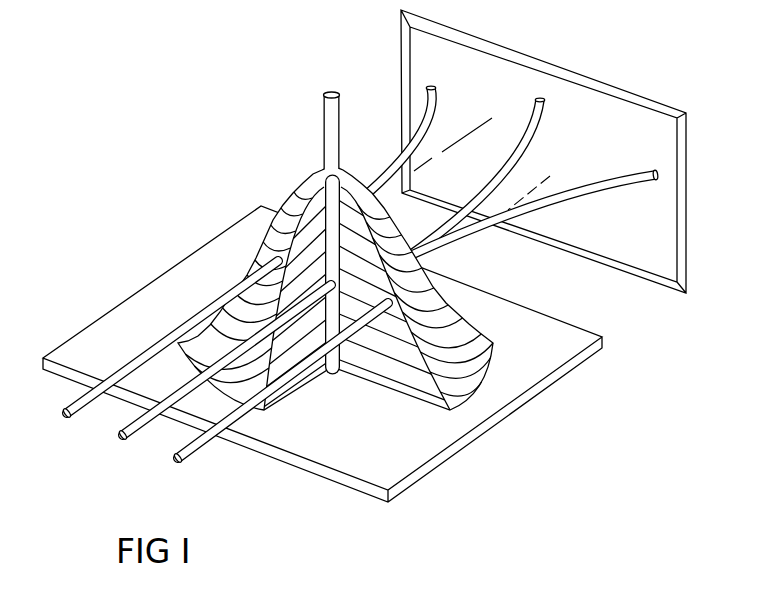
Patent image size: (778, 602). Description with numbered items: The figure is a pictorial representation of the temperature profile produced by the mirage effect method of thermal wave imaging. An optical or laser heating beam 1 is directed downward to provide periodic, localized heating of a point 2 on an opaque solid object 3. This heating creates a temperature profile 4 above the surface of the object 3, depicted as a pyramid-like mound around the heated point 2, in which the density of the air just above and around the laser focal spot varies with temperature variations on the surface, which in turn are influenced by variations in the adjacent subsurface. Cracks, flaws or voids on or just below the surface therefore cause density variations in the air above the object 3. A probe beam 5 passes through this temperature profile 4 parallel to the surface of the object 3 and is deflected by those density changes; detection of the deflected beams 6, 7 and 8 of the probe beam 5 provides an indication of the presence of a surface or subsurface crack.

The heating beam 1 is at (322, 112).
The point 2 is at (332, 375).
The opaque solid object 3 is at (439, 447).
The temperature profile 4 is at (278, 225).
The probe beam 5 is at (137, 441).
The deflected beam 6 is at (481, 116).
The deflected beam 7 is at (543, 113).
The deflected beam 8 is at (593, 156).